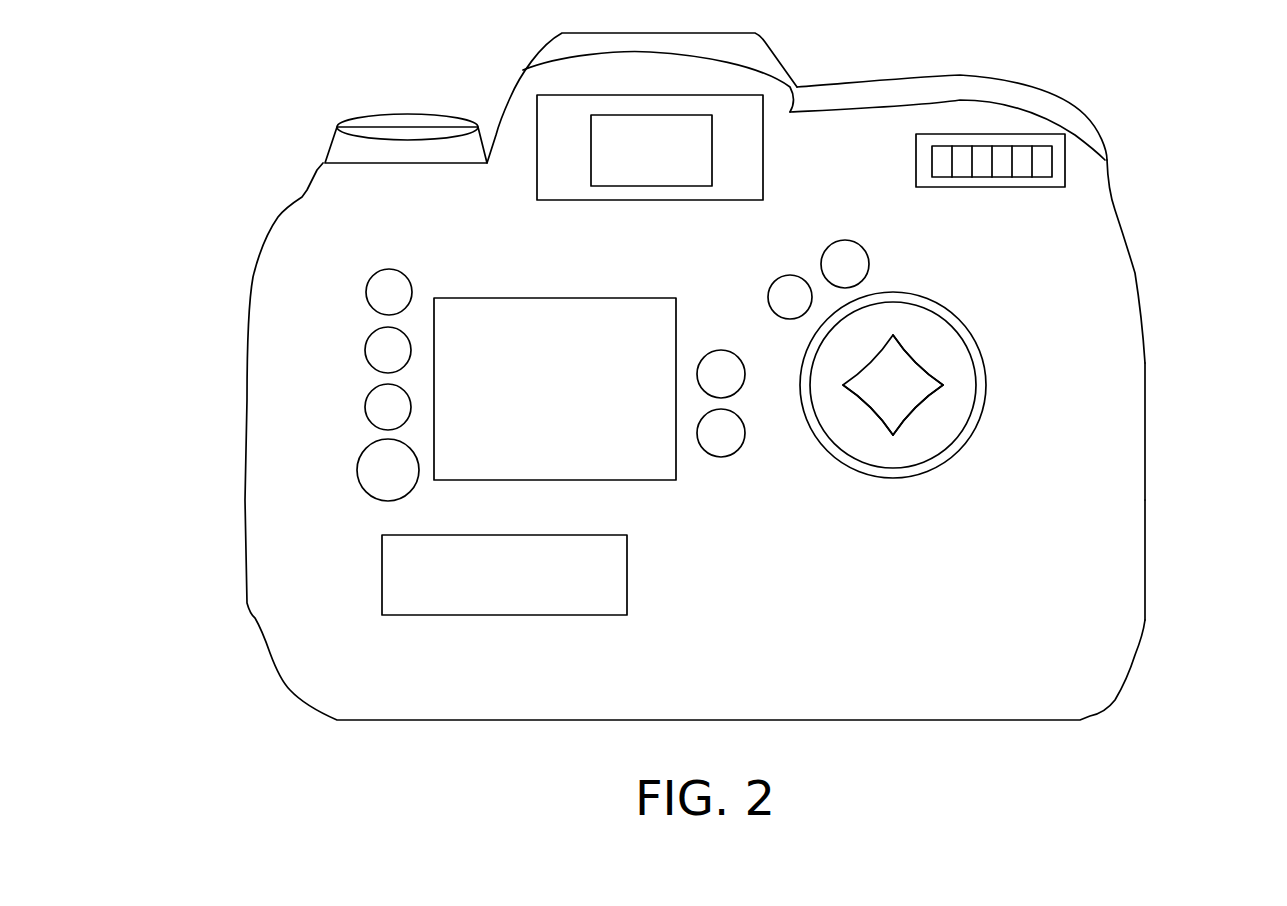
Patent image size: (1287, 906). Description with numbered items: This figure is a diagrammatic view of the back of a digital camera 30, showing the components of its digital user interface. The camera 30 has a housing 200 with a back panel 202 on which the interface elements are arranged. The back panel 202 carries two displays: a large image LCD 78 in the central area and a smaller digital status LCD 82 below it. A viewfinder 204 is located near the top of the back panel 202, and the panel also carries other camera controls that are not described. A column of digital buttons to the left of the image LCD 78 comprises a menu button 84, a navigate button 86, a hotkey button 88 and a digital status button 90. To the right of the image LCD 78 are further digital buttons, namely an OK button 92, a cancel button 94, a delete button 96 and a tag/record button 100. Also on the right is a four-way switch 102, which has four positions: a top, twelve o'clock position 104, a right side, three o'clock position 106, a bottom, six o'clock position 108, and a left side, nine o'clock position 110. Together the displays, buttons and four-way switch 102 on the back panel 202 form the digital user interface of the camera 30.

The camera 30 is at (228, 618).
The image LCD 78 is at (678, 471).
The digital status LCD 82 is at (627, 565).
The menu button 84 is at (370, 280).
The navigate button 86 is at (365, 347).
The hotkey button 88 is at (364, 405).
The digital status button 90 is at (357, 466).
The OK button 92 is at (848, 242).
The cancel button 94 is at (792, 274).
The delete button 96 is at (735, 352).
The tag/record button 100 is at (745, 434).
The 4-way switch 102 is at (900, 372).
The top (12 o'clock) position 104 is at (892, 330).
The right side (3 o'clock) position 106 is at (950, 385).
The bottom (6 o'clock) position 108 is at (893, 437).
The left side (9 o'clock) position 110 is at (840, 385).
The housing 200 is at (1145, 566).
The back panel 202 is at (1112, 452).
The viewfinder 204 is at (608, 155).